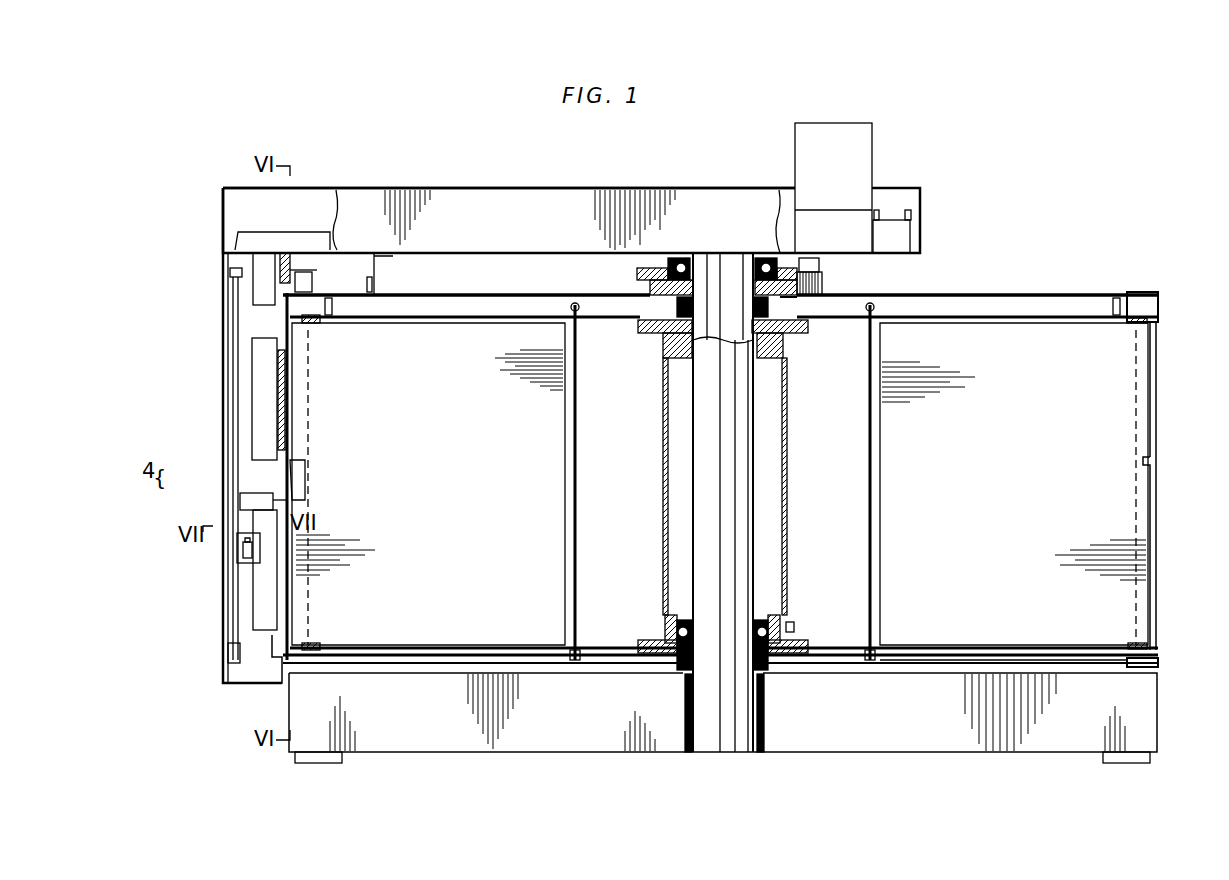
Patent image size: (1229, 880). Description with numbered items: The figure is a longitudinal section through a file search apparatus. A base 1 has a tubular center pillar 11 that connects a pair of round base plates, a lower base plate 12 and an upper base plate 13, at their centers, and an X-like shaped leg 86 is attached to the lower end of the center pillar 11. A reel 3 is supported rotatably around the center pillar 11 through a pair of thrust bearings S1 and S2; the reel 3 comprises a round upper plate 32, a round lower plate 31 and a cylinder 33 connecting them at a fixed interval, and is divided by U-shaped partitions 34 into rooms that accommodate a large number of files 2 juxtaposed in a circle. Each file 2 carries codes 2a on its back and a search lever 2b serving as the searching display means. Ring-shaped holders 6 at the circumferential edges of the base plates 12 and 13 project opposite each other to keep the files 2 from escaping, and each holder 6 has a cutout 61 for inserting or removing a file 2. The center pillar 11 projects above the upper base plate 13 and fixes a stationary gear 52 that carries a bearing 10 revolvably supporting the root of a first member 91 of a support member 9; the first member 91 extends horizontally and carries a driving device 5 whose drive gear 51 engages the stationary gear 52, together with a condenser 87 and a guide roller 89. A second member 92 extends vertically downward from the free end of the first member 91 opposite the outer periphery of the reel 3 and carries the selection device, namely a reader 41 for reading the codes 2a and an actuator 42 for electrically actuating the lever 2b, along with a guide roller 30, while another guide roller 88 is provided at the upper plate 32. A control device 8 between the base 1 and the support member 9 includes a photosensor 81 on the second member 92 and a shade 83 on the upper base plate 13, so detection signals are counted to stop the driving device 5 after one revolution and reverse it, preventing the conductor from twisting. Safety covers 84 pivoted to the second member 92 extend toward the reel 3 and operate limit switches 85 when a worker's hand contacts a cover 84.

The base 1 is at (816, 659).
The file 2 is at (1158, 543).
The codes 2a is at (1158, 388).
The search lever 2b is at (1158, 468).
The reel 3 is at (863, 662).
The driving device 5 is at (872, 148).
The ring-shaped holder 6 is at (1160, 302).
The cutout 61 is at (1160, 326).
The control device 8 is at (343, 153).
The photosensor 81 is at (287, 262).
The shade 83 is at (294, 275).
The safety cover 84 is at (238, 593).
The limit switch 85 is at (243, 556).
The X-like shaped leg 86 is at (890, 752).
The condenser 87 is at (910, 237).
The guide roller 88 is at (333, 308).
The guide roller 89 is at (366, 284).
The support member 9 is at (465, 188).
The first member 91 is at (575, 195).
The second member 92 is at (222, 408).
The bearing 10 is at (690, 257).
The tubular center pillar 11 is at (758, 440).
The lower base plate 12 is at (848, 661).
The upper base plate 13 is at (900, 297).
The guide roller 30 is at (272, 688).
The lower plate 31 is at (916, 662).
The upper plate 32 is at (937, 315).
The cylinder 33 is at (788, 519).
The partition 34 is at (868, 552).
The reader 41 is at (278, 438).
The actuator 42 is at (258, 497).
The drive gear 51 is at (824, 280).
The stationary gear 52 is at (795, 300).
The thrust bearing S1 is at (782, 348).
The thrust bearing S2 is at (770, 622).